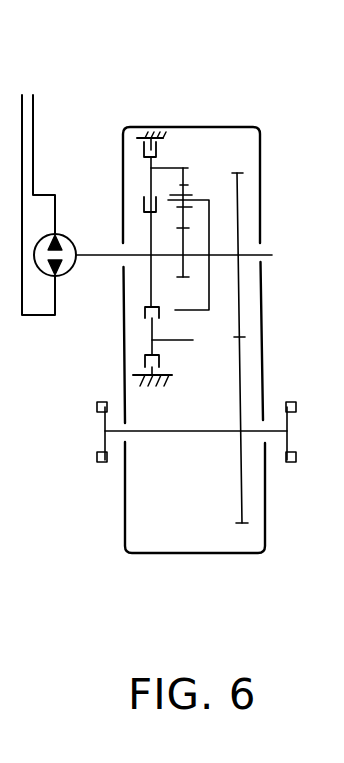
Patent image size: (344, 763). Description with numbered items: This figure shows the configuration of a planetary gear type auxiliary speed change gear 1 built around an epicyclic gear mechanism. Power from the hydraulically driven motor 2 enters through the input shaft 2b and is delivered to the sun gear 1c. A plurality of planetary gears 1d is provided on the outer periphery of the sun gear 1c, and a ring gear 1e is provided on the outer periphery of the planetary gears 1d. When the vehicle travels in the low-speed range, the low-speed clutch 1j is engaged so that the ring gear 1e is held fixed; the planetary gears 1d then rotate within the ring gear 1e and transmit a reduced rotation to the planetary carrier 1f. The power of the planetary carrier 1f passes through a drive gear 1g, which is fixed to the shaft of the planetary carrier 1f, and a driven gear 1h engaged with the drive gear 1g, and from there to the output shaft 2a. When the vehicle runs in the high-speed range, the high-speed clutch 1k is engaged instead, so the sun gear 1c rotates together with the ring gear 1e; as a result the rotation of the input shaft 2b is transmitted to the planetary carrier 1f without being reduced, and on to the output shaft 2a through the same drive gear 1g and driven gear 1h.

The auxiliary speed change gear 1 is at (236, 108).
The low-speed clutch 1j is at (158, 150).
The high-speed clutch 1k is at (143, 205).
The ring gear 1e is at (177, 167).
The planetary gears 1d is at (186, 183).
The sun gear 1c is at (183, 262).
The planetary carrier 1f is at (209, 292).
The drive gear 1g is at (238, 213).
The driven gear 1h is at (240, 380).
The hydraulically driven motor 2 is at (70, 237).
The input shaft 2b is at (115, 262).
The output shaft 2a is at (117, 434).